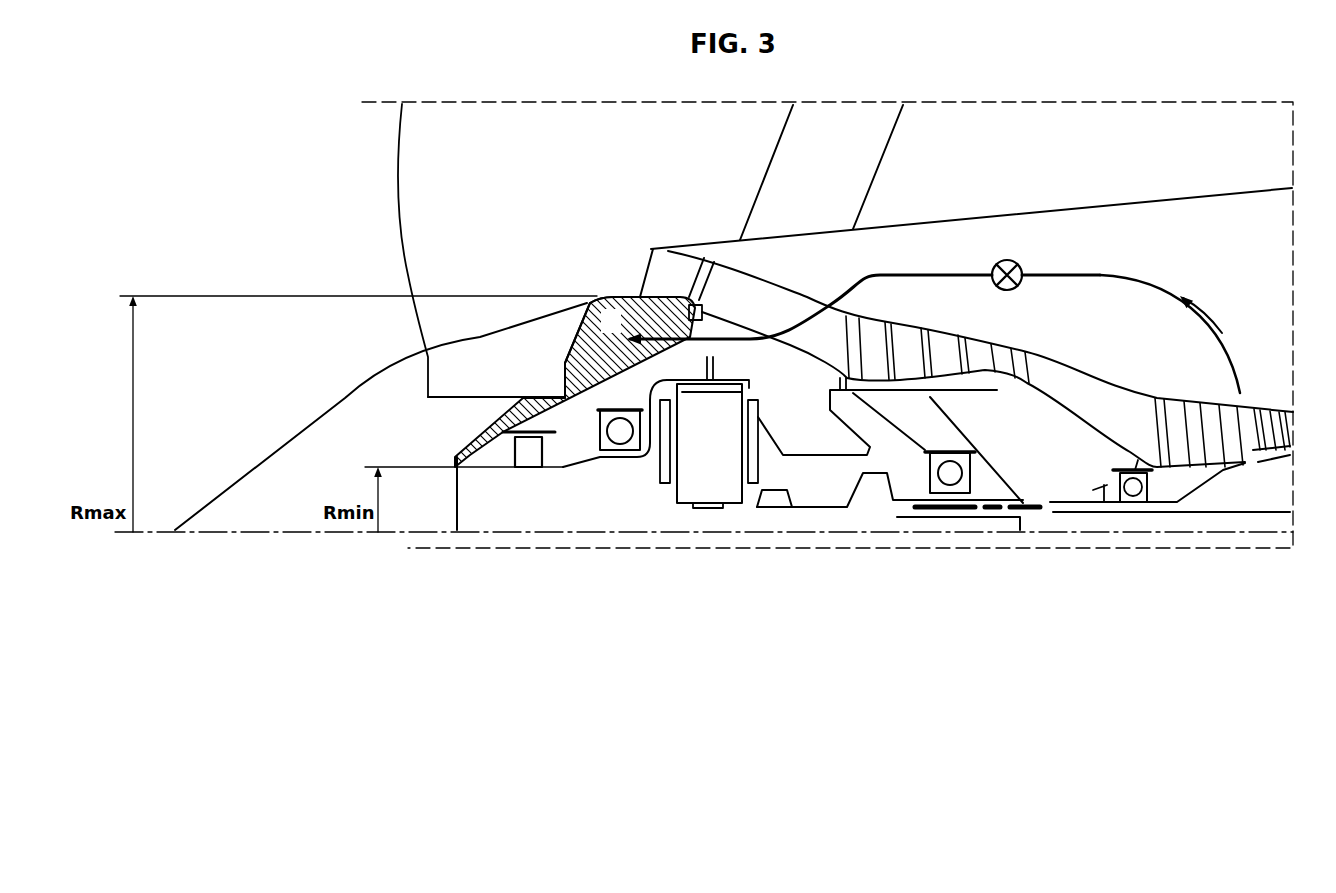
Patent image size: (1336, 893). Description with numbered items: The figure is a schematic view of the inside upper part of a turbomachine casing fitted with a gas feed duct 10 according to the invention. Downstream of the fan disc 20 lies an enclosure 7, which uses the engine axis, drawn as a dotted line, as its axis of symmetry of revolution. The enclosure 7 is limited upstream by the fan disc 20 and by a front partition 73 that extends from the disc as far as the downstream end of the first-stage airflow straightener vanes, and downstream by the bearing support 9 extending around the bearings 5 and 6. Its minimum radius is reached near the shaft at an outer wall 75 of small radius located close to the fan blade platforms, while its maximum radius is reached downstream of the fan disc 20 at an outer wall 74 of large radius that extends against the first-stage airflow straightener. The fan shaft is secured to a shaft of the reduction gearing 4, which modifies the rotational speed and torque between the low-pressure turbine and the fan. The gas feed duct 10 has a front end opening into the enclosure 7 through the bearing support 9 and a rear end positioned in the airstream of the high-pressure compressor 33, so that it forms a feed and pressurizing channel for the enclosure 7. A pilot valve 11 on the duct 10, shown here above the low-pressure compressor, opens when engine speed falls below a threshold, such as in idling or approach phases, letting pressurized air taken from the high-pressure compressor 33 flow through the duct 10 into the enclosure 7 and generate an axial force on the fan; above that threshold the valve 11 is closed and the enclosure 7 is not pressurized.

The reduction gearing mechanism 4 is at (718, 454).
The bearing 5 is at (620, 457).
The bearing 6 is at (550, 453).
The enclosure 7 is at (619, 334).
The bearing support 9 is at (658, 363).
The gas feed duct 10 is at (822, 282).
The pilot valve 11 is at (1008, 255).
The fan disc 20 is at (514, 390).
The high-pressure compressor 33 is at (1253, 457).
The front partition 73 is at (583, 354).
The outer wall of large radius 74 is at (627, 290).
The outer wall of small radius 75 is at (547, 390).